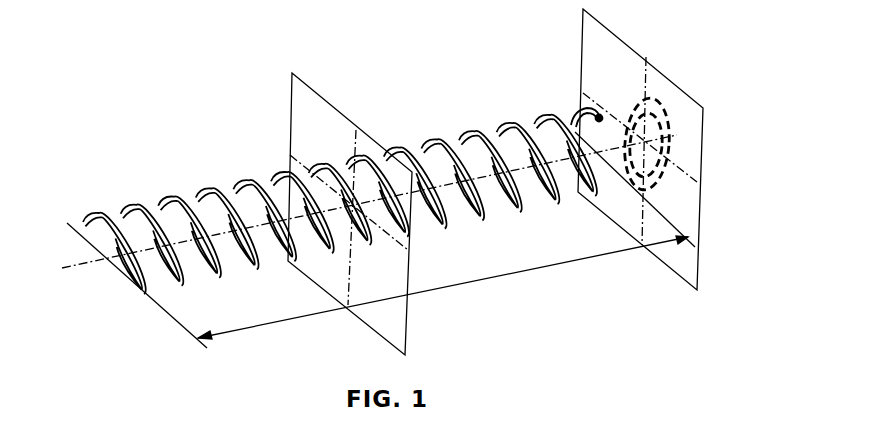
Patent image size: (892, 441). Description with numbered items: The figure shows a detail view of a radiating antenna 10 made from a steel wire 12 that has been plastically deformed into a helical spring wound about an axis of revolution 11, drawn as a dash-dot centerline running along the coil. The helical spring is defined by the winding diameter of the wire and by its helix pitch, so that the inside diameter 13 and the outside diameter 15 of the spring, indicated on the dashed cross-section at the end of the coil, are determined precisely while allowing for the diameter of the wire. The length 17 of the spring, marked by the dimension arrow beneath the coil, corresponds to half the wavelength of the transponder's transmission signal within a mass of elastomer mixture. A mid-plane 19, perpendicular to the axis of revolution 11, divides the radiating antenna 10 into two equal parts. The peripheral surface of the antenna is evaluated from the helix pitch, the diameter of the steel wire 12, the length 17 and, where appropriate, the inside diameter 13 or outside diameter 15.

The radiating antenna 10 is at (410, 128).
The axis of revolution 11 is at (112, 262).
The steel wire 12 is at (223, 190).
The inside diameter 13 is at (638, 110).
The outside diameter 15 is at (647, 113).
The length of the spring 17 is at (567, 263).
The mid-plane 19 is at (407, 333).